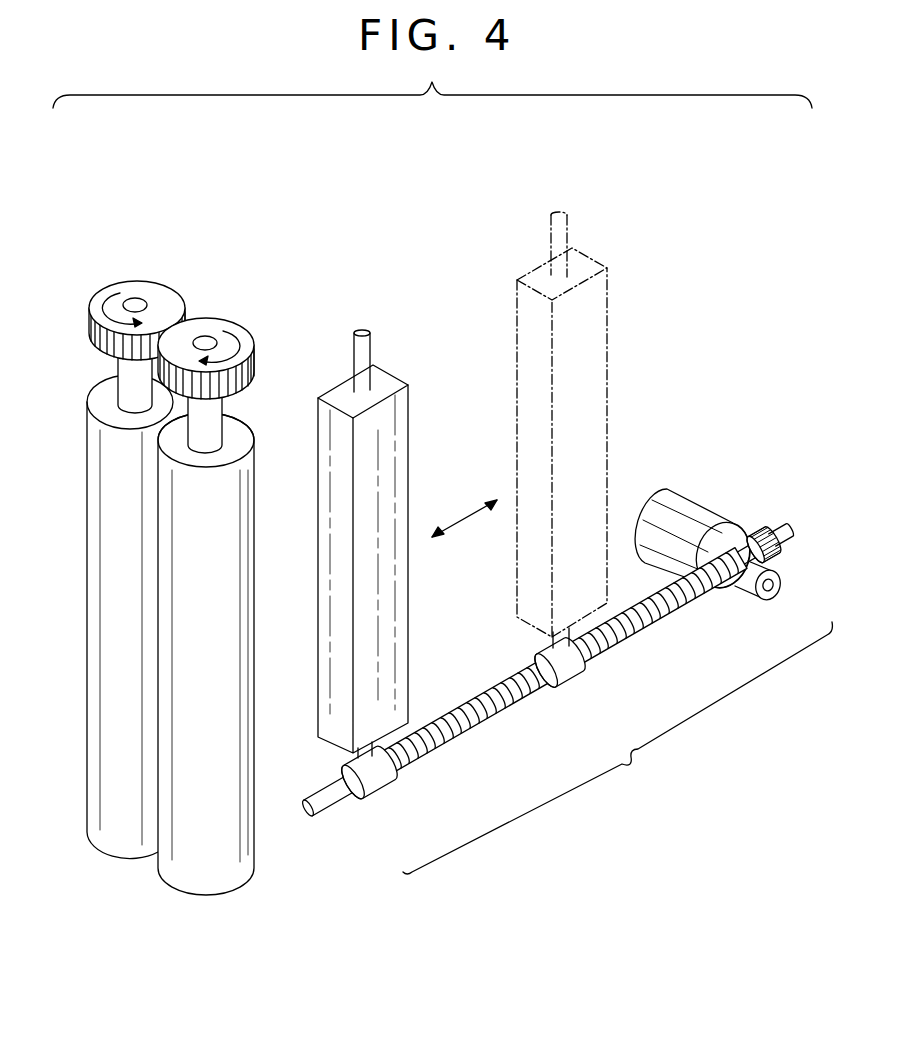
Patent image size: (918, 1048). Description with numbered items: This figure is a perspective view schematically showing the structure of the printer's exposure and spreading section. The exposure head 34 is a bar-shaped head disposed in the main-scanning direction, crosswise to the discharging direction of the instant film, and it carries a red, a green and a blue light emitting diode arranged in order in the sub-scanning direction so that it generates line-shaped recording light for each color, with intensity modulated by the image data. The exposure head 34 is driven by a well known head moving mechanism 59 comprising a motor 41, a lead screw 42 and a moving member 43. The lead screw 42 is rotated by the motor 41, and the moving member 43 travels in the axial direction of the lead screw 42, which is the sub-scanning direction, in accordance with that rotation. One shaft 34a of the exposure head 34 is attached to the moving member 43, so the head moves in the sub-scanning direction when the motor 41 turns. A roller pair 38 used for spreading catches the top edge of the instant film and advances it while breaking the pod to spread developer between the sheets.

The roller pair 38 is at (137, 282).
The exposure head 34 is at (402, 438).
The shaft 34a is at (352, 757).
The motor 41 is at (696, 500).
The lead screw 42 is at (478, 729).
The moving member 43 is at (387, 789).
The head moving mechanism 59 is at (617, 748).